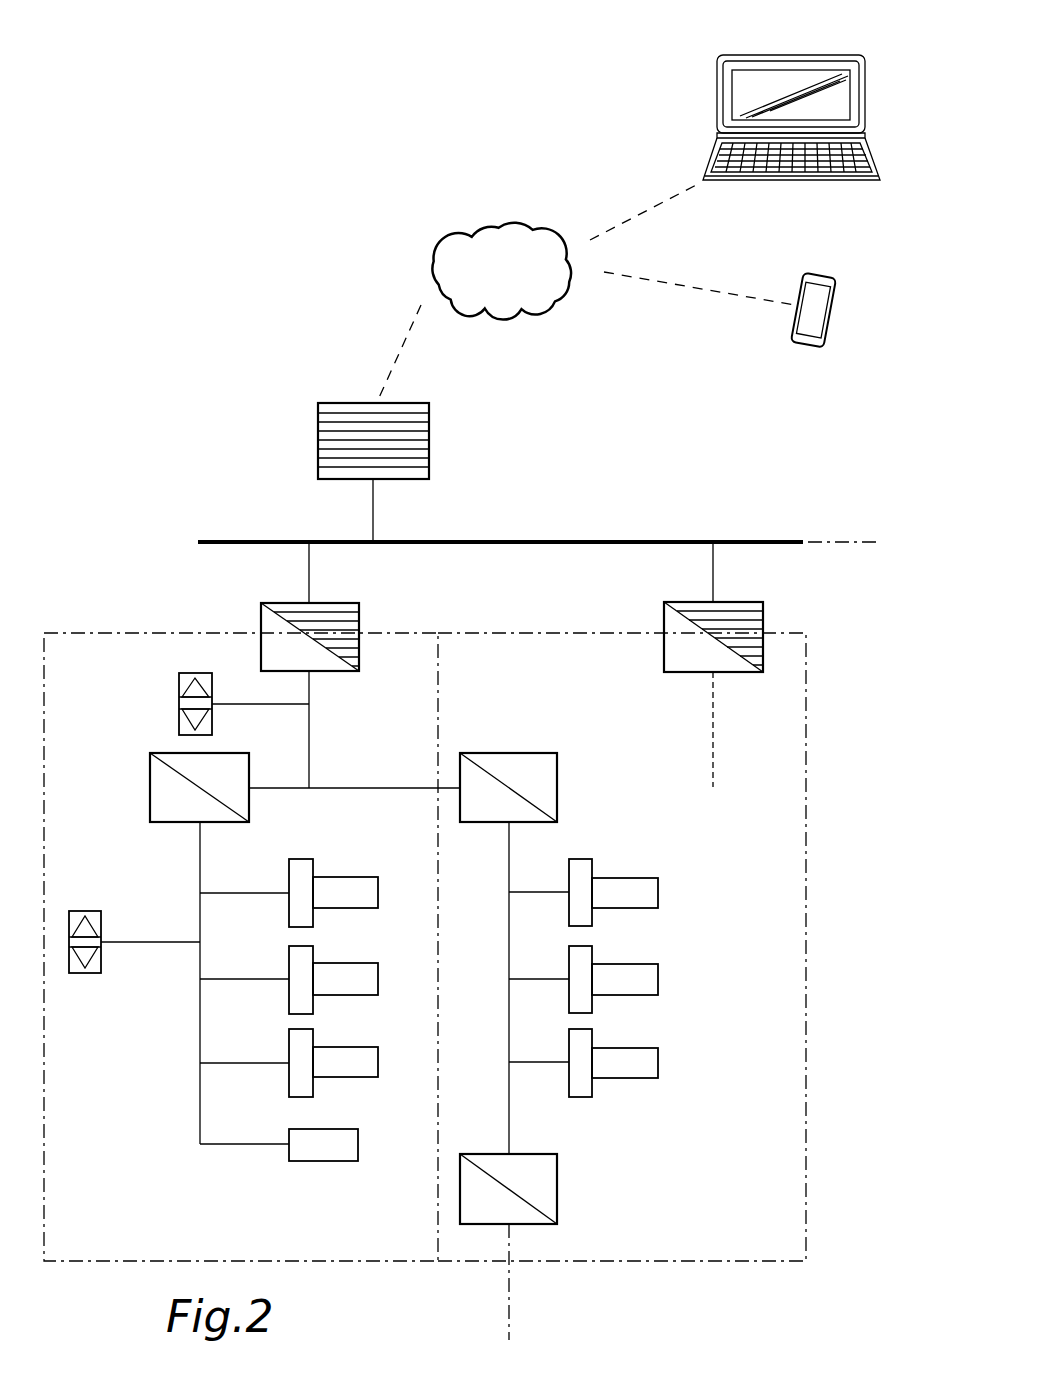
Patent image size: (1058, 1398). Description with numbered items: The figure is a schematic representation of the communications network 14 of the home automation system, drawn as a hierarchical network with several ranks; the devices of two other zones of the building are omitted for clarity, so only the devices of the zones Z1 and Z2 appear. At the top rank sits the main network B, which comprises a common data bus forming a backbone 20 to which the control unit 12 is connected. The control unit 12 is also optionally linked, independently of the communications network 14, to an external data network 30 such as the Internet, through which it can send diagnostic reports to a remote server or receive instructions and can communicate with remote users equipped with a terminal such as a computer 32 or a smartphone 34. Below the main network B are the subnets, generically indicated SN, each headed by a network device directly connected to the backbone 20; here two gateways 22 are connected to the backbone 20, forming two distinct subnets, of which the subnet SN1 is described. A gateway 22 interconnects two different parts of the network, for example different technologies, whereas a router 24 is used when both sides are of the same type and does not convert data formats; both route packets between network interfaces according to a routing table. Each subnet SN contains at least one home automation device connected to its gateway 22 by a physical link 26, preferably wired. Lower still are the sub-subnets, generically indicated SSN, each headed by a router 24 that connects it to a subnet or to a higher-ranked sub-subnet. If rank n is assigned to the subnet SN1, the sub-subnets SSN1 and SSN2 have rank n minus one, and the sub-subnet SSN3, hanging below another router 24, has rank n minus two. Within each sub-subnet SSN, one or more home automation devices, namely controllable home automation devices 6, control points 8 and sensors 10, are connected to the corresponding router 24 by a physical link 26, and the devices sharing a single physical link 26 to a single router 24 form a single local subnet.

The communications network 14 is at (272, 220).
The computer 32 is at (878, 90).
The smartphone 34 is at (854, 309).
The external data network 30 is at (501, 271).
The control unit 12 is at (343, 430).
The backbone 20 is at (570, 540).
The network gateway 22 is at (272, 656).
The control point 8 is at (188, 673).
The router 24 is at (160, 800).
The physical link 26 is at (200, 1026).
The controllable home automation device 6 is at (368, 893).
The sensor 10 is at (348, 1143).
The zone Z1 is at (73, 633).
The zone Z2 is at (790, 633).
The subnet SN1 is at (386, 632).
The sub-subnet SSN1 is at (182, 1074).
The sub-subnet SSN2 is at (592, 820).
The sub-subnet SSN3 is at (582, 1215).
The main network B is at (897, 392).
The subnet SN is at (897, 633).
The sub-subnet SSN is at (897, 795).